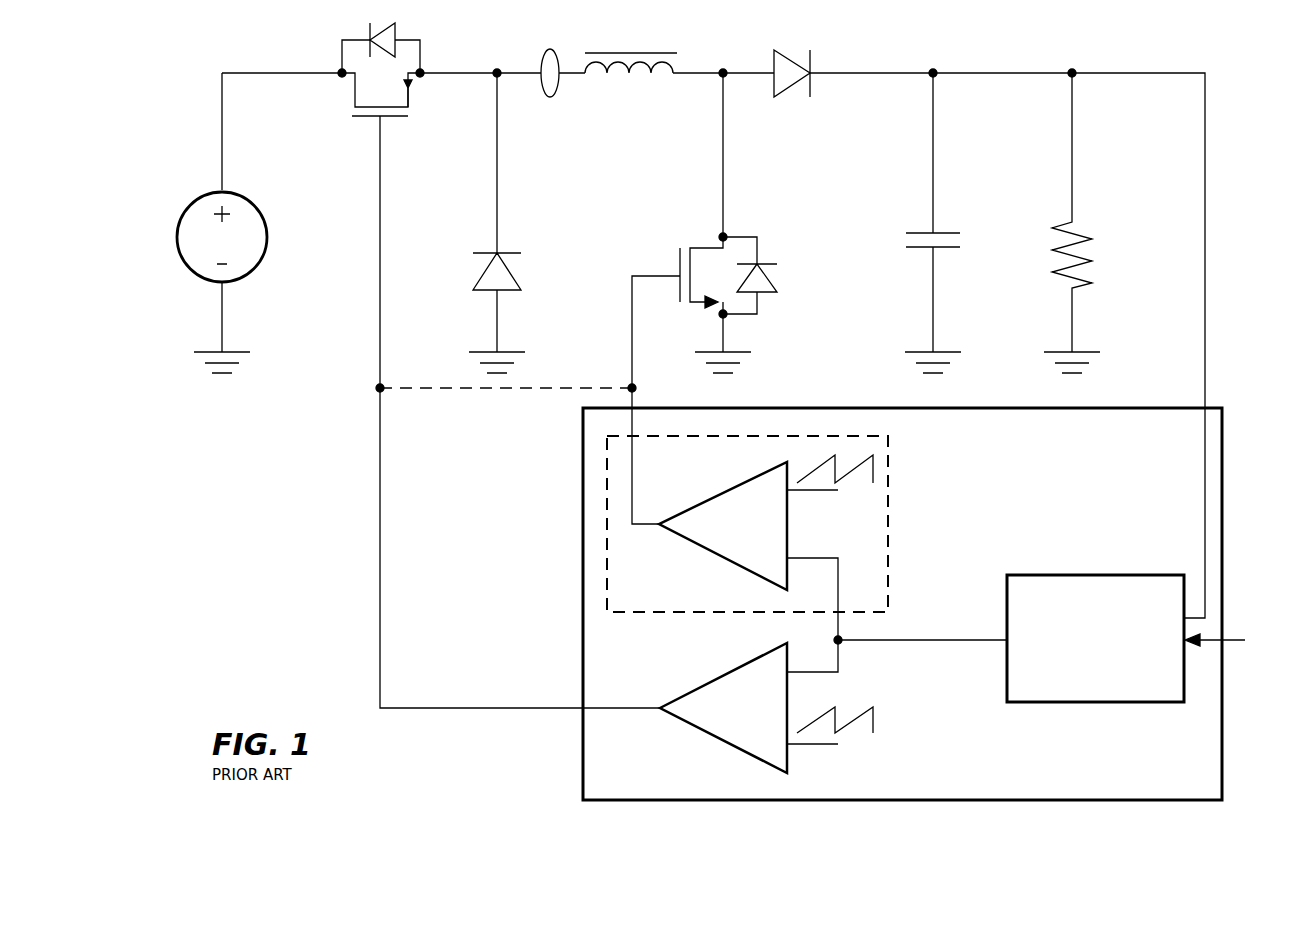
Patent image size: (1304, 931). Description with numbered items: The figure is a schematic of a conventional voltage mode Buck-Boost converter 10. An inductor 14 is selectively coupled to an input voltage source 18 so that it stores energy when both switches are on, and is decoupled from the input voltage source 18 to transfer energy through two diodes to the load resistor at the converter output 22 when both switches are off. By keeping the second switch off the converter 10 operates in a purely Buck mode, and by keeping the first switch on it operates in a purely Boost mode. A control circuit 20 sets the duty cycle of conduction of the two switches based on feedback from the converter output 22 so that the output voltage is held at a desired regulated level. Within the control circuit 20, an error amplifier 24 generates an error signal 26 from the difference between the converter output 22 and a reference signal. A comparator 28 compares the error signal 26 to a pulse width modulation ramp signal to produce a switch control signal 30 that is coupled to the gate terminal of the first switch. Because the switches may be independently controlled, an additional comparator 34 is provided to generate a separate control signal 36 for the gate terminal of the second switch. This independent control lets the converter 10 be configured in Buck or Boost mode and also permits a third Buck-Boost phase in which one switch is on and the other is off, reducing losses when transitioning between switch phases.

The voltage mode Buck-Boost converter 10 is at (253, 502).
The inductor 14 is at (627, 76).
The input voltage source 18 is at (250, 190).
The control circuit 20 is at (938, 604).
The converter output 22 is at (936, 67).
The error amplifier 24 is at (1095, 638).
The error signal Vc 26 is at (926, 637).
The comparator 28 is at (808, 706).
The switch control signal 30 is at (377, 228).
The additional comparator 34 is at (835, 547).
The control signal 36 is at (655, 274).